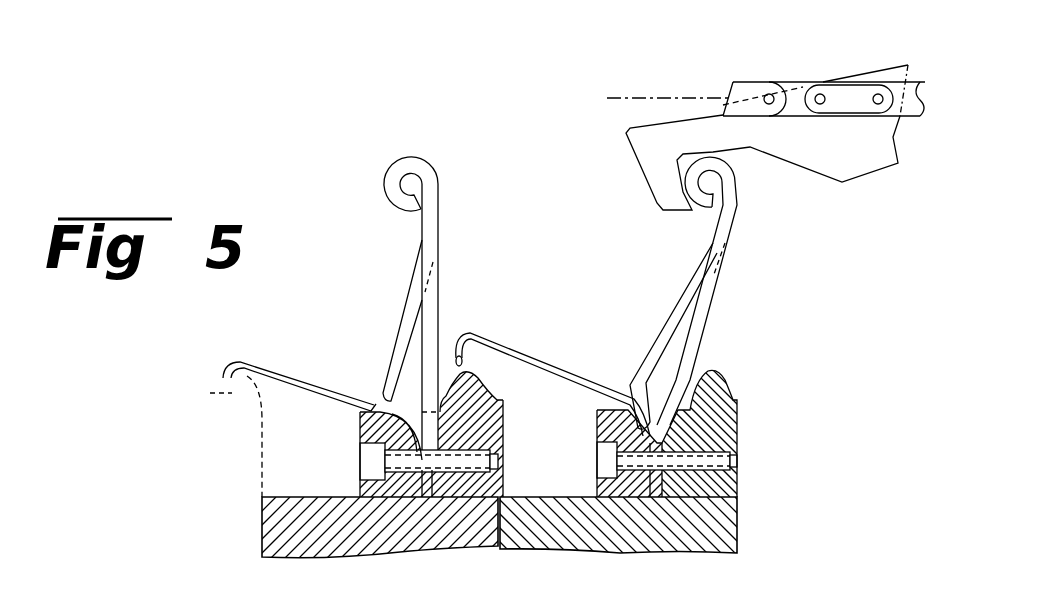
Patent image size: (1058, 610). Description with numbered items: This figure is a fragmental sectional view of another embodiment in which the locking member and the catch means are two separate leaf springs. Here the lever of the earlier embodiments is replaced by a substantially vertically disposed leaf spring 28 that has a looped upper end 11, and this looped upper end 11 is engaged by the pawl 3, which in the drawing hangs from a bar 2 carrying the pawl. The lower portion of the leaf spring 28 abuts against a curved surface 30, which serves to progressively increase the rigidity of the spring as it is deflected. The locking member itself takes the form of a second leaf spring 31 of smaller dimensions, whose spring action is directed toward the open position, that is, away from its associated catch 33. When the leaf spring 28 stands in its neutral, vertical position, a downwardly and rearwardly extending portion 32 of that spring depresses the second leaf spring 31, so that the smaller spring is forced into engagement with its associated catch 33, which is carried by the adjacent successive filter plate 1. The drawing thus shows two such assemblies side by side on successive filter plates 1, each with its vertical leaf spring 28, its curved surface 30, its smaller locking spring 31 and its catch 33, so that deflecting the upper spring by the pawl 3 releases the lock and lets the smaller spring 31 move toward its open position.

The filter plate 1 is at (262, 527).
The bar 2 is at (754, 82).
The pawl 3 is at (848, 172).
The looped upper end 11 is at (412, 160).
The leaf spring 28 is at (438, 228).
The curved surface 30 is at (461, 401).
The second leaf spring 31 is at (305, 380).
The downwardly and rearwardly extending portion 32 is at (667, 318).
The catch 33 is at (500, 402).